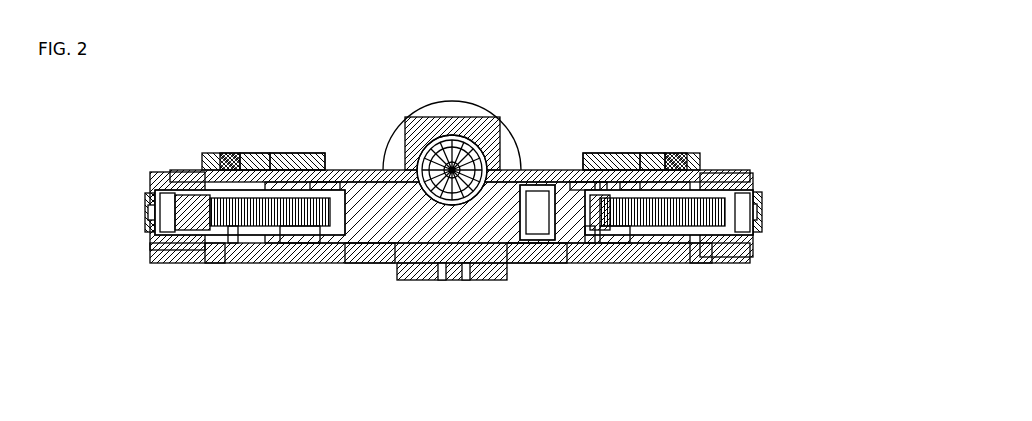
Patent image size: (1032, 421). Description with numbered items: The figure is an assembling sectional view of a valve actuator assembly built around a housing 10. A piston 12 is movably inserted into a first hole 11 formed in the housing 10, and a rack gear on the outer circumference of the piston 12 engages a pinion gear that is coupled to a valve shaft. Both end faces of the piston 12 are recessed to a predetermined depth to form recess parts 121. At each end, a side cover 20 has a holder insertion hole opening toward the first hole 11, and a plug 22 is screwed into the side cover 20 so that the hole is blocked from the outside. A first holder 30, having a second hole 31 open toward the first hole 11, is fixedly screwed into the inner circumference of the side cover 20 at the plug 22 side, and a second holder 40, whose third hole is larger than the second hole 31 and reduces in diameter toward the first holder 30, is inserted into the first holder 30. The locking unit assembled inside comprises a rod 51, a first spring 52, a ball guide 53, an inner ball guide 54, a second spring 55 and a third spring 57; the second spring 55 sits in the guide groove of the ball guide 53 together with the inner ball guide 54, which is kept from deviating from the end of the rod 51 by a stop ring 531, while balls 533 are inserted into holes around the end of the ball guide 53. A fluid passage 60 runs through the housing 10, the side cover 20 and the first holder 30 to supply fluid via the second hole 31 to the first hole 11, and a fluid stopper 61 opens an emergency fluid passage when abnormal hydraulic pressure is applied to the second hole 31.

The housing 10 is at (378, 170).
The first hole 11 is at (568, 185).
The piston 12 is at (445, 265).
The recess part 121 is at (528, 170).
The side cover 20 is at (265, 153).
The plug 22 is at (152, 250).
The first holder 30 is at (197, 170).
The second hole 31 is at (250, 153).
The second holder 40 is at (278, 235).
The rod 51 is at (215, 235).
The first spring 52 is at (205, 250).
The ball guide 53 is at (283, 153).
The stop ring 531 is at (358, 263).
The ball 533 is at (325, 182).
The inner ball guide 54 is at (308, 243).
The second spring 55 is at (608, 182).
The third spring 57 is at (635, 182).
The fluid passage 60 is at (233, 243).
The fluid stopper 61 is at (230, 153).